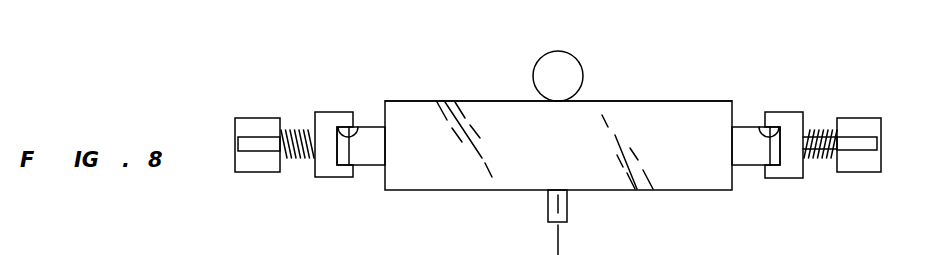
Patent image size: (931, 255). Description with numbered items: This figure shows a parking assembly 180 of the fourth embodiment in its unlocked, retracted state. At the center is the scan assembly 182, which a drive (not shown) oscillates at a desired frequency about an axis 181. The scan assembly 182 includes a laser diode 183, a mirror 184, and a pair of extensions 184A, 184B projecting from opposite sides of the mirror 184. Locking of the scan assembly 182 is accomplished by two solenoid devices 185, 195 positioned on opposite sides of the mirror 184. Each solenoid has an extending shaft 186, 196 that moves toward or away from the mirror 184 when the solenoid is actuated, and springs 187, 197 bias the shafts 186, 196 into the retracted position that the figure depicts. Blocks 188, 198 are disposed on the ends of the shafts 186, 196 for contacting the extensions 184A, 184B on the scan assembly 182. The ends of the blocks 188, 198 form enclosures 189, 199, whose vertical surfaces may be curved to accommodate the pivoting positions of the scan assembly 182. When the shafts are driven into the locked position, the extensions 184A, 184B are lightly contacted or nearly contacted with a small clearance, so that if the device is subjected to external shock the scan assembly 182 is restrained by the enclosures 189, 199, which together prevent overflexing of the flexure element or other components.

The parking assembly 180 is at (322, 70).
The axis 181 is at (560, 239).
The scan assembly 182 is at (684, 95).
The laser diode 183 is at (535, 68).
The mirror 184 is at (453, 173).
The extension 184A is at (753, 152).
The extension 184B is at (367, 158).
The solenoid device 185 is at (853, 109).
The shaft 186 is at (858, 146).
The spring 187 is at (820, 158).
The block 188 is at (792, 118).
The enclosure 189 is at (762, 128).
The solenoid device 195 is at (260, 108).
The shaft 196 is at (262, 144).
The spring 197 is at (302, 158).
The block 198 is at (327, 168).
The enclosure 199 is at (355, 132).